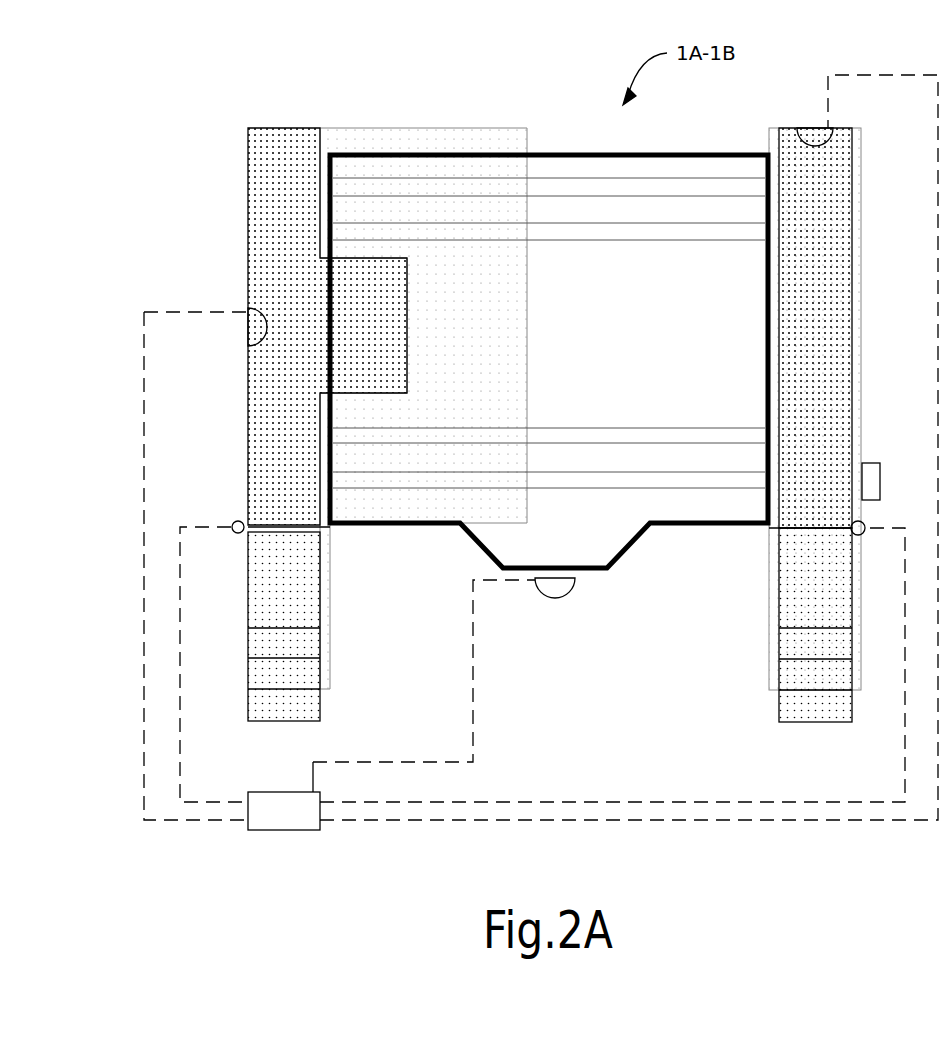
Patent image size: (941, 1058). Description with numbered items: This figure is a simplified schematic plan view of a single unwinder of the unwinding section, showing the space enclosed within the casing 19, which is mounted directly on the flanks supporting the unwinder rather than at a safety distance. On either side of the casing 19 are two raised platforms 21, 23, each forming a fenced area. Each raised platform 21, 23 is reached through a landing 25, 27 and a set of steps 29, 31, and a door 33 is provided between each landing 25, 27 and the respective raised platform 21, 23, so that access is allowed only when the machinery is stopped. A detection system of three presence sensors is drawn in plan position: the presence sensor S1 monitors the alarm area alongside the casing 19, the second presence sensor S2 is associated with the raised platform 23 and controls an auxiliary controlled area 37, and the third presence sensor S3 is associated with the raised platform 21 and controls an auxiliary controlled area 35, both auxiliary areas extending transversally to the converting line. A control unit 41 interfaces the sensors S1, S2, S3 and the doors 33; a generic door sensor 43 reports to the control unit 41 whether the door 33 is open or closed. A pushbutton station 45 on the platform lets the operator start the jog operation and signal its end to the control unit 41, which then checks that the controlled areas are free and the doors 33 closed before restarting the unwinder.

The casing 19 is at (683, 525).
The raised platform 21 is at (285, 193).
The raised platform 23 is at (840, 240).
The landing 25 is at (290, 588).
The landing 27 is at (833, 593).
The set of steps 29 is at (290, 672).
The set of steps 31 is at (840, 672).
The door 33 is at (318, 526).
The auxiliary controlled area 35 is at (391, 128).
The auxiliary controlled area 37 is at (855, 182).
The control unit 41 is at (284, 811).
The door sensor 43 is at (859, 536).
The pushbutton station 45 is at (872, 463).
The presence sensor S1 is at (555, 602).
The second presence sensor S2 is at (815, 123).
The third presence sensor S3 is at (241, 327).